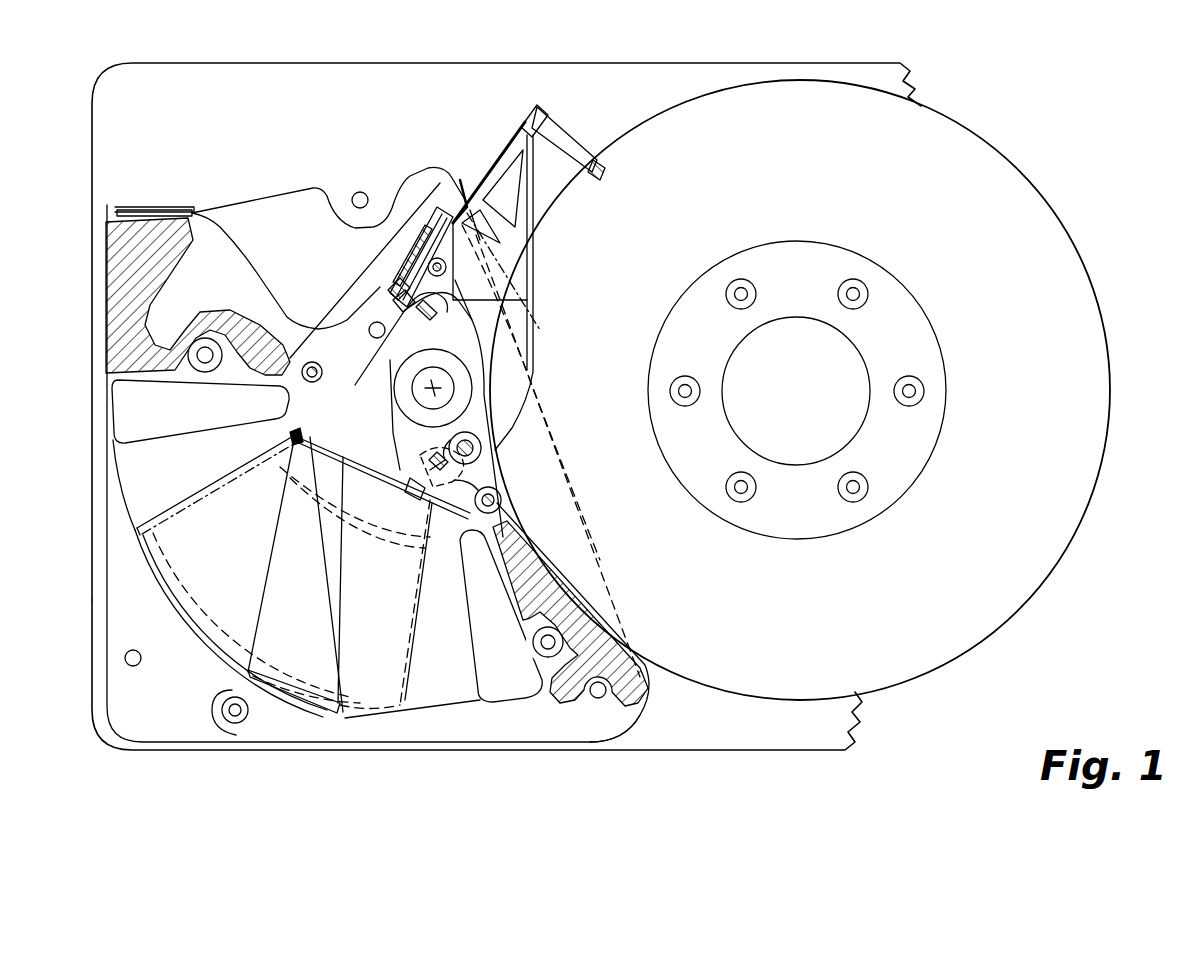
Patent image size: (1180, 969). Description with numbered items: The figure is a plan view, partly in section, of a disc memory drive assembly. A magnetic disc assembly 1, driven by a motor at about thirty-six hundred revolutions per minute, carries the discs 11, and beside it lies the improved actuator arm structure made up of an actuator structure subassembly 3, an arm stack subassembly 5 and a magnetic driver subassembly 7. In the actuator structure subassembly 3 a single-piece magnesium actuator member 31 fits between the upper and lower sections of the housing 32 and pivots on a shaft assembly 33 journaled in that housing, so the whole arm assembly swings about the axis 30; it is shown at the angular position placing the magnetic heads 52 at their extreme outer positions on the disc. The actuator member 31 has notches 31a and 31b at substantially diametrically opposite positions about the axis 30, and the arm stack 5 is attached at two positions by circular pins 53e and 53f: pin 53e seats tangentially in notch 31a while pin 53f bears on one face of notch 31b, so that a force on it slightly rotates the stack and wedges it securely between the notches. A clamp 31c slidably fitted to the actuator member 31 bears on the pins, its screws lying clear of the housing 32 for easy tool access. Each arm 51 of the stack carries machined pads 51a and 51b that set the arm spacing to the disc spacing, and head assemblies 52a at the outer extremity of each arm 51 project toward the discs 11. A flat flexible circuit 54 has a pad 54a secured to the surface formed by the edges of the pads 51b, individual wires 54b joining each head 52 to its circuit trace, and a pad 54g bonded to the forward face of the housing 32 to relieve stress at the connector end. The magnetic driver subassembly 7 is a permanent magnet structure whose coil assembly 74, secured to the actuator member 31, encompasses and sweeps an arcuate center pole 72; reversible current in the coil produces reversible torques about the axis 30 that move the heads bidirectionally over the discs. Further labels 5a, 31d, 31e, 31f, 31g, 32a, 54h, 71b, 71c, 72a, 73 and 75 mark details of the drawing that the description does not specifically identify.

The magnetic disc assembly 1 is at (652, 105).
The discs 11 is at (725, 104).
The actuator structure subassembly 3 is at (468, 363).
The axis 30 is at (440, 388).
The shaft assembly 33 is at (470, 394).
The actuator member 31 is at (400, 348).
The notch 31a is at (458, 472).
The notch 31b is at (450, 298).
The clamp 31c is at (390, 342).
The pad retaining pin 31d is at (293, 432).
The arm portion 31e is at (496, 514).
The bolt 31f is at (309, 383).
The bolt 31g is at (503, 500).
The housing 32 is at (232, 305).
The bracket lobe 32a is at (612, 712).
The arm stack subassembly 5 is at (535, 246).
The caliper portion 5a is at (478, 428).
The arm 51 is at (537, 212).
The pad 51a is at (465, 448).
The pad 51b is at (405, 285).
The magnetic heads 52 is at (608, 170).
The head assemblies 52a is at (578, 128).
The pin 53e is at (432, 462).
The pin 53f is at (440, 306).
The flat flexible circuit 54 is at (272, 282).
The pad 54a is at (415, 250).
The wires 54b is at (498, 150).
The pad 54g is at (180, 204).
The carrier sliding surface 54h is at (428, 210).
The magnetic driver subassembly 7 is at (490, 620).
The seal 71b is at (189, 418).
The seal boot 71c is at (214, 338).
The arcuate center pole 72 is at (440, 708).
The pad backing 72a is at (218, 633).
The pad lining 73 is at (180, 606).
The coil assembly 74 is at (305, 703).
The pad guide 75 is at (305, 470).